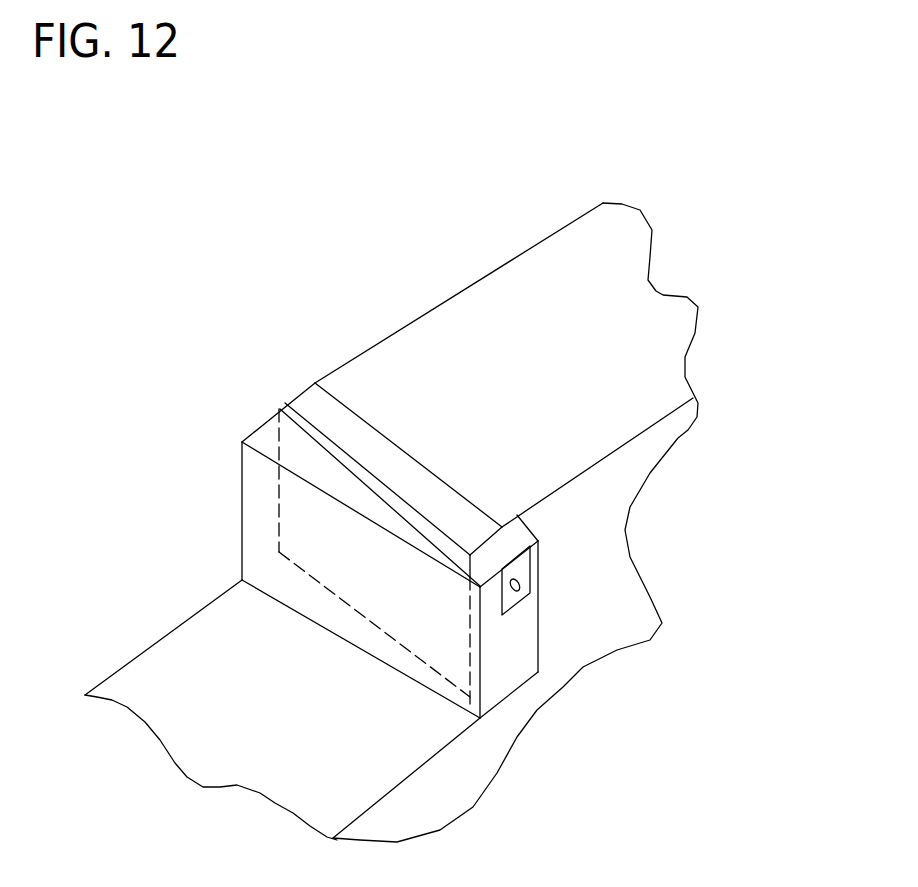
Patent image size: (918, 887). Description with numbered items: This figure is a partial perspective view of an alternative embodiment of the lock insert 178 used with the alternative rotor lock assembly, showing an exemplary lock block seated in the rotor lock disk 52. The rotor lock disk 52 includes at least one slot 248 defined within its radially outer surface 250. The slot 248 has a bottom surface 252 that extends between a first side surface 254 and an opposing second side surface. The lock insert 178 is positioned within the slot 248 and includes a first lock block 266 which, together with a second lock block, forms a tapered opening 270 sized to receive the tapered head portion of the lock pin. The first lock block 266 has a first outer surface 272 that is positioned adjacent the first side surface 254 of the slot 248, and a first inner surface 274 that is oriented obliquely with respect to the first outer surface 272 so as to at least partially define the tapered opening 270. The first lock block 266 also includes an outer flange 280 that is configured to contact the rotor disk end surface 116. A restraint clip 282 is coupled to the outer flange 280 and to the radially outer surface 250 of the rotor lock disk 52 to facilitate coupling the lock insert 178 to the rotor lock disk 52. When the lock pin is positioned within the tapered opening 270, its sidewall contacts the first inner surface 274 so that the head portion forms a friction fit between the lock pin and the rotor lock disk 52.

The rotor lock disk 52 is at (445, 293).
The rotor disk end surface 116 is at (618, 492).
The lock insert 178 is at (215, 295).
The slot 248 is at (117, 529).
The radially outer surface 250 is at (460, 373).
The bottom surface 252 is at (190, 655).
The first side surface 254 is at (302, 497).
The first lock block 266 is at (268, 423).
The tapered opening 270 is at (388, 708).
The first outer surface 272 is at (312, 525).
The first inner surface 274 is at (457, 610).
The outer flange 280 is at (535, 553).
The restraint clip 282 is at (433, 495).